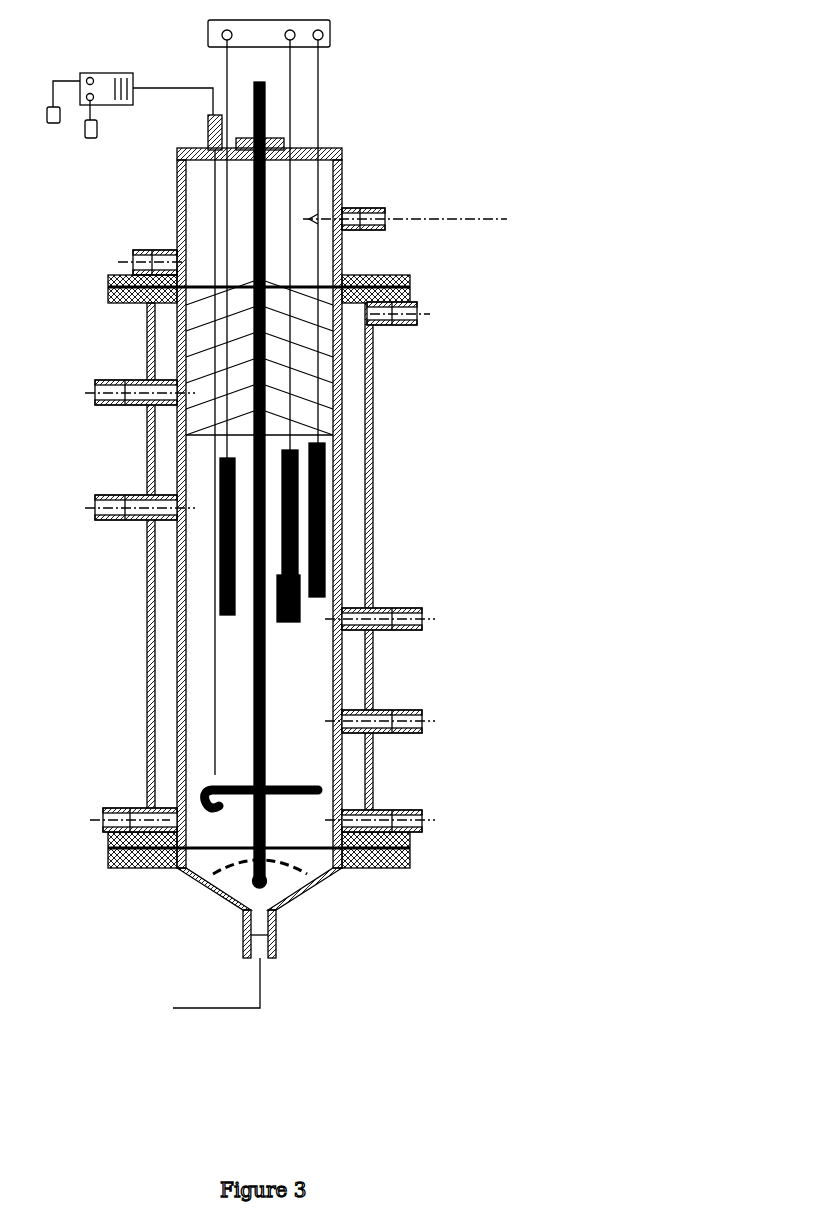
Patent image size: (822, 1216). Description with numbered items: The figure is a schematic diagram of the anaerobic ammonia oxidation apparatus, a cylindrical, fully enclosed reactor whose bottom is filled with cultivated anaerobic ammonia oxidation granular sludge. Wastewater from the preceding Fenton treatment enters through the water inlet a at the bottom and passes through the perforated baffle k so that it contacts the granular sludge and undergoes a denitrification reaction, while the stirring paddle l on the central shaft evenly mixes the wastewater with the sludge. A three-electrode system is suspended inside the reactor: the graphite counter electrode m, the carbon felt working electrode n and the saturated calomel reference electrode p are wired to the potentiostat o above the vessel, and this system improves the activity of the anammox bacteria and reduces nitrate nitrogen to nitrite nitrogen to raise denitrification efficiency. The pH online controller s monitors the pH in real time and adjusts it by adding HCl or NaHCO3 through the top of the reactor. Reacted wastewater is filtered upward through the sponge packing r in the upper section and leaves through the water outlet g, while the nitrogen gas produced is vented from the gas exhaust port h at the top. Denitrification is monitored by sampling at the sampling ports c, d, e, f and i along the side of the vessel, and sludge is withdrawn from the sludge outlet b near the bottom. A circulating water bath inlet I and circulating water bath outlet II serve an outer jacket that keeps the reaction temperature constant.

The potentiostat o is at (279, 239).
The pH online controller s is at (121, 109).
The gas exhaust port h is at (205, 445).
The water outlet g is at (405, 208).
The sampling port i is at (150, 252).
The circulating water bath outlet II is at (398, 327).
The sampling port f is at (140, 382).
The sponge packing r is at (333, 400).
The sampling port e is at (140, 498).
The sampling port d is at (380, 609).
The graphite electrode m is at (230, 549).
The carbon felt electrode n is at (288, 552).
The reference electrode p is at (317, 533).
The sampling port c is at (380, 711).
The sludge outlet b is at (380, 810).
The stirring paddle l is at (261, 785).
The perforated baffle k is at (260, 858).
The circulating water bath inlet I is at (133, 812).
The water inlet a is at (233, 959).